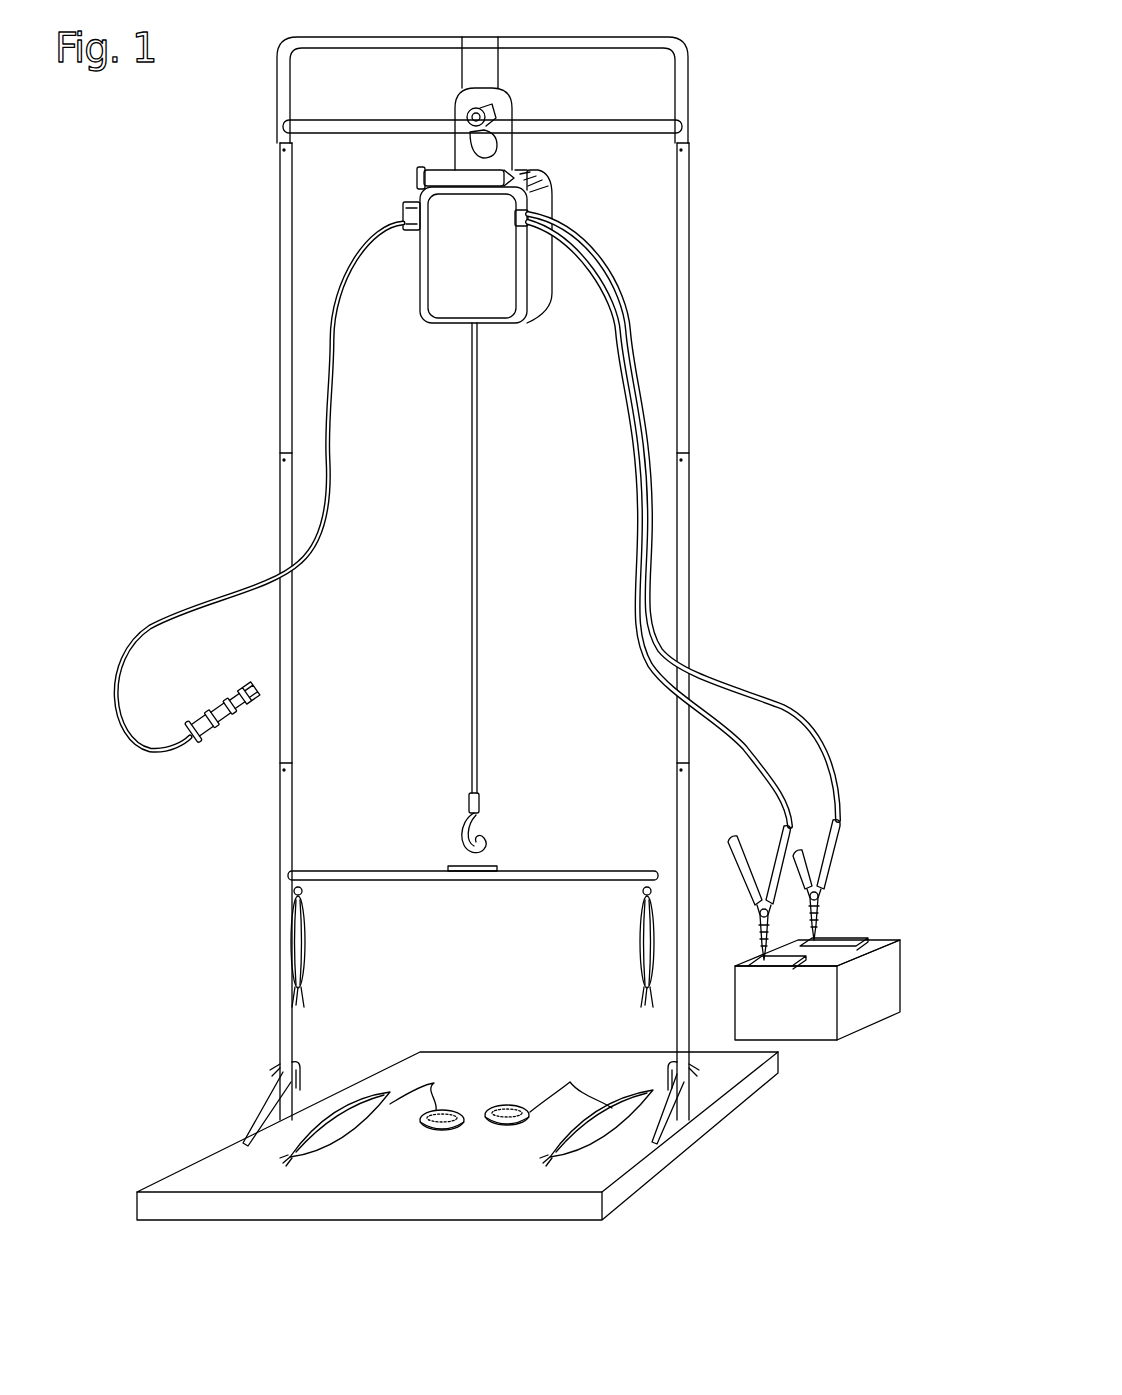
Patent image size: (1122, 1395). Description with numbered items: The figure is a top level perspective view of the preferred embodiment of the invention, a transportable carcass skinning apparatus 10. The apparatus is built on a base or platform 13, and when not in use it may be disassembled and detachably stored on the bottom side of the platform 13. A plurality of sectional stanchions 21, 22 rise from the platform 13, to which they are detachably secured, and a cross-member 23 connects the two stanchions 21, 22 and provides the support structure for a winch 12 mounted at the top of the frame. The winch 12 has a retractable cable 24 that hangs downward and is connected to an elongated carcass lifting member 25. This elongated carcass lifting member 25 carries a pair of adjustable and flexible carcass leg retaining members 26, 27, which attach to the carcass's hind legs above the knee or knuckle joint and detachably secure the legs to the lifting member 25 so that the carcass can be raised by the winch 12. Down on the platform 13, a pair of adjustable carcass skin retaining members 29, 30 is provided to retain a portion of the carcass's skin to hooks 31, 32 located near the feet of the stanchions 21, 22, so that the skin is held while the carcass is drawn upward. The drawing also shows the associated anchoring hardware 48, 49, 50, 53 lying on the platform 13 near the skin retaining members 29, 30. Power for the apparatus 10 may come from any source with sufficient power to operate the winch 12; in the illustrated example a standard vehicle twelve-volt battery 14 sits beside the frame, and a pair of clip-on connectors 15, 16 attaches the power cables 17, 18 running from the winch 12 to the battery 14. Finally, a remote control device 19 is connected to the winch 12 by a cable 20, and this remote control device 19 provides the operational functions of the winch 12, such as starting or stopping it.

The carcass skinning apparatus 10 is at (816, 158).
The winch 12 is at (550, 188).
The platform 13 is at (507, 1052).
The battery 14 is at (868, 1012).
The clip-on connector 15 is at (846, 829).
The clip-on connector 16 is at (731, 838).
The power cable 17 is at (782, 705).
The power cable 18 is at (772, 783).
The remote control device 19 is at (217, 732).
The cable 20 is at (140, 640).
The sectional stanchion 21 is at (700, 591).
The sectional stanchion 22 is at (256, 497).
The cross-member 23 is at (695, 52).
The retractable cable 24 is at (478, 530).
The elongated carcass lifting member 25 is at (534, 869).
The carcass leg retaining member 26 is at (307, 936).
The carcass leg retaining member 27 is at (638, 942).
The carcass skin retaining member 29 is at (571, 1082).
The carcass skin retaining member 30 is at (425, 1082).
The hook 31 is at (302, 1067).
The hook 32 is at (668, 1066).
The anchor stake 48 is at (348, 1128).
The anchor disc 49 is at (442, 1131).
The anchor stake 50 is at (590, 1140).
The anchor disc 53 is at (507, 1125).